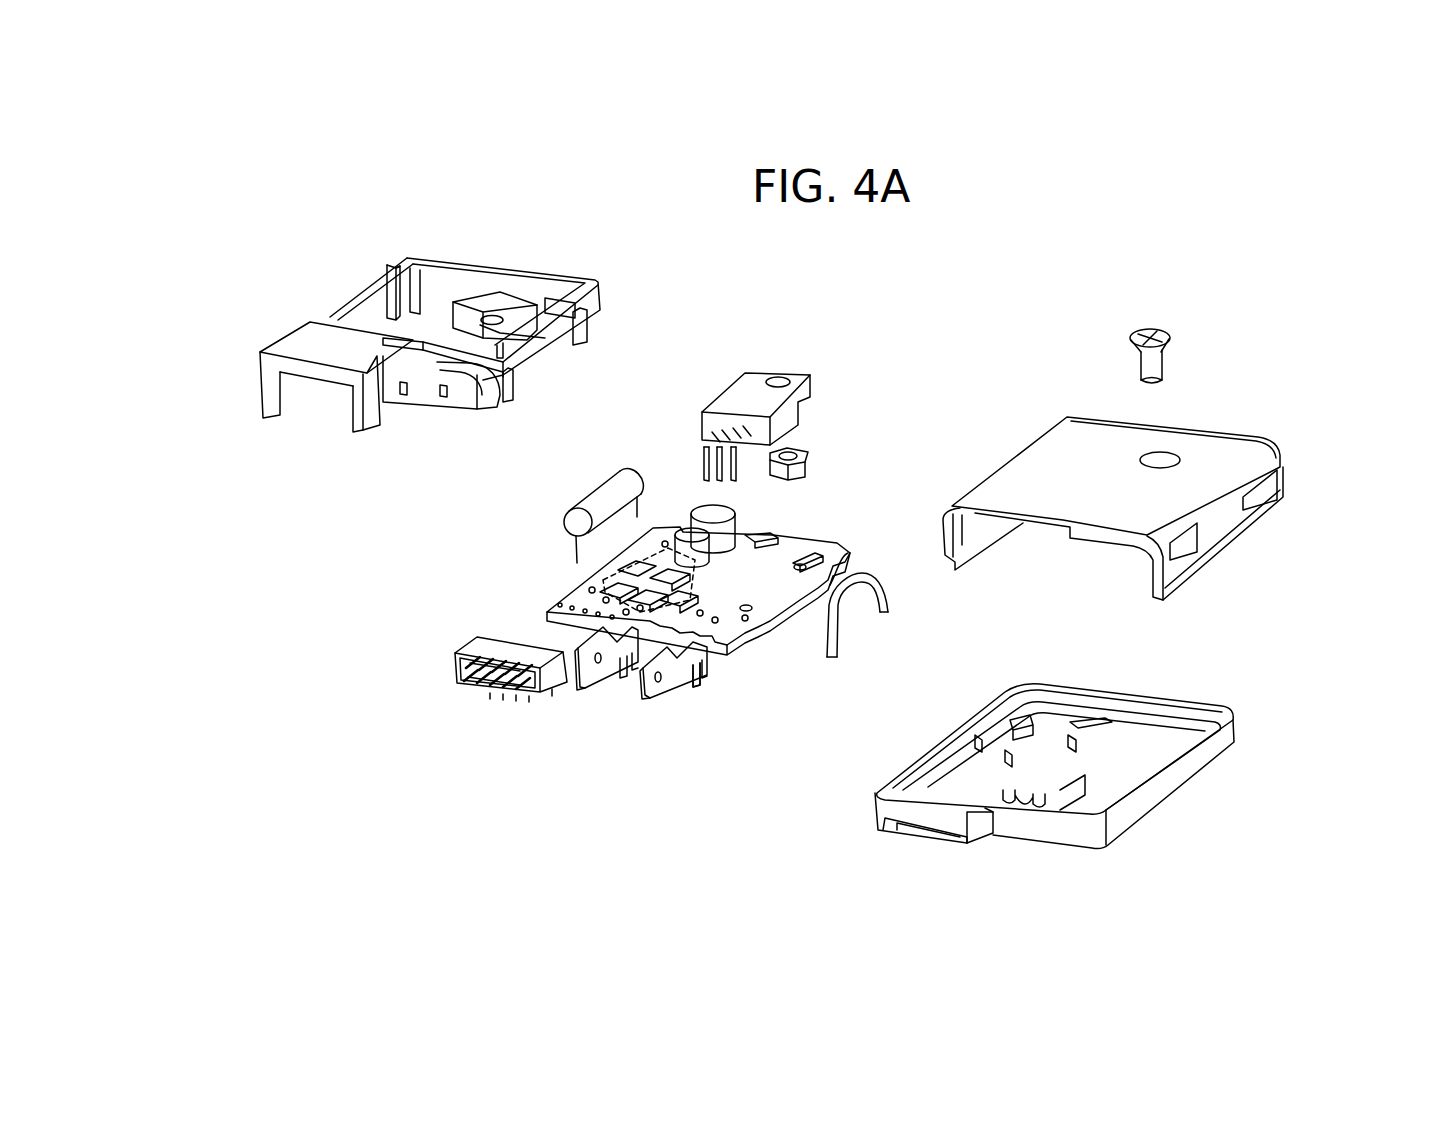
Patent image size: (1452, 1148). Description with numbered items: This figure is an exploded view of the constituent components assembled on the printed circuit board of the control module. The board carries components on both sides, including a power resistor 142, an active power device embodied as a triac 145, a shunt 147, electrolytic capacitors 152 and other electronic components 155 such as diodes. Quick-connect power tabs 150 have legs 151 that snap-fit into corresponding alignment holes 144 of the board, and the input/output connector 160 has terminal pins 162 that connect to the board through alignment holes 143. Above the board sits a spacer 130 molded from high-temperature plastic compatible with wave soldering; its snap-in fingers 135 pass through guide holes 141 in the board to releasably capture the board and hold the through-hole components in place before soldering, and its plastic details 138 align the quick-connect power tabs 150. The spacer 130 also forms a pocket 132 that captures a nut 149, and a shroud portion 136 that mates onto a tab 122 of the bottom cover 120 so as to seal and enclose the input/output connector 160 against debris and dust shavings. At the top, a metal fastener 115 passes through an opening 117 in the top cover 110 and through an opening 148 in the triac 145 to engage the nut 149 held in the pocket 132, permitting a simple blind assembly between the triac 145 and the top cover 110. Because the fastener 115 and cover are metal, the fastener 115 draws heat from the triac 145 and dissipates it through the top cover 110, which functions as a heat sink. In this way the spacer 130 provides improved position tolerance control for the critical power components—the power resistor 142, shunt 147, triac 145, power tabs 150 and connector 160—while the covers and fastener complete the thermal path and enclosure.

The top cover 110 is at (1285, 445).
The fastener 115 is at (1172, 333).
The opening 117 is at (1160, 457).
The bottom cover 120 is at (1210, 762).
The tab 122 is at (933, 830).
The spacer 130 is at (600, 292).
The pocket 132 is at (490, 302).
The snap-in fingers 135 is at (508, 380).
The shroud portion 136 is at (264, 412).
The plastic details 138 is at (442, 399).
The guide holes 141 is at (850, 552).
The power resistor 142 is at (840, 637).
The alignment holes 143 is at (665, 598).
The alignment holes 144 is at (712, 627).
The triac 145 is at (703, 410).
The shunt 147 is at (583, 494).
The opening 148 is at (783, 381).
The nut 149 is at (808, 458).
The quick-connect power tabs 150 is at (648, 688).
The legs 151 is at (700, 678).
The electrolytic capacitors 152 is at (735, 510).
The other electronic components 155 is at (613, 597).
The input/output connector 160 is at (470, 648).
The terminal pins 162 is at (487, 688).